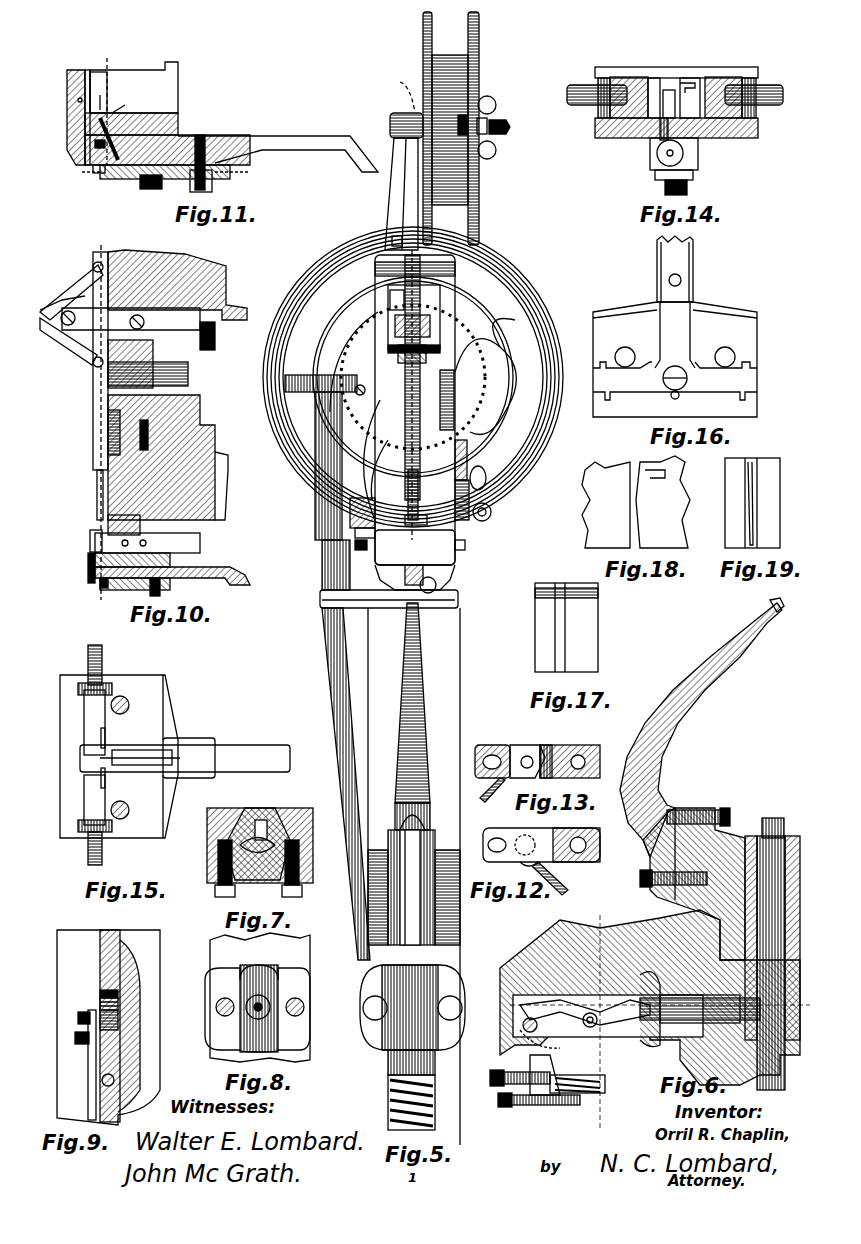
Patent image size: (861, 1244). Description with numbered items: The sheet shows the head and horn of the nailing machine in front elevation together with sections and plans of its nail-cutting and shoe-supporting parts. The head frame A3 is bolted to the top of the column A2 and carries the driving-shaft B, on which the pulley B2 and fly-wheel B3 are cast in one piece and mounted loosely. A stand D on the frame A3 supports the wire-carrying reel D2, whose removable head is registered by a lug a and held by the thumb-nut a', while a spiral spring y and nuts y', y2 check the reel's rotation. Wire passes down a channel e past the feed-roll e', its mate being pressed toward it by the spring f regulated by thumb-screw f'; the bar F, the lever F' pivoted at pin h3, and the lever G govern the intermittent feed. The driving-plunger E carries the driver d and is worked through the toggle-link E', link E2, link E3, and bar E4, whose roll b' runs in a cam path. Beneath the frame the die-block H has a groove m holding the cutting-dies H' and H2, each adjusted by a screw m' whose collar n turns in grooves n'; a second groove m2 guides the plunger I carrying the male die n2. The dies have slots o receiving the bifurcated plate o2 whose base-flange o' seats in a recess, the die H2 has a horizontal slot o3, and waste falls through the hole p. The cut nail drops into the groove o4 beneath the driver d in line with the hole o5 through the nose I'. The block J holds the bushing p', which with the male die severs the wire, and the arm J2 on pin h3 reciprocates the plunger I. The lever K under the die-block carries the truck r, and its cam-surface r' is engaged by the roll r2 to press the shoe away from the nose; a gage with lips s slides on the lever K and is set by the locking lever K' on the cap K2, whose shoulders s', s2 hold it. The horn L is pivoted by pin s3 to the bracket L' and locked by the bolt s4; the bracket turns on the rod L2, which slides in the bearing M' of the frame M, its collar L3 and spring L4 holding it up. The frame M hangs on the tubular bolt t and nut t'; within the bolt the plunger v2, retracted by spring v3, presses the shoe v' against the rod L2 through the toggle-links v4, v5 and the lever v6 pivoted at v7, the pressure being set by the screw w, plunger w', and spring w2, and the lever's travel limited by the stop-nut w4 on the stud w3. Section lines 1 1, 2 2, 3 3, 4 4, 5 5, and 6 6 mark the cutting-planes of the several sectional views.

In FIG. 5, the standard or column A2 is at (425, 678).
In FIG. 6, the standard or column A2 is at (570, 935).
In FIG. 7, the standard or column A2 is at (225, 808).
In FIG. 8, the standard or column A2 is at (300, 960).
In FIG. 9, the standard or column A2 is at (70, 964).
In FIG. 10, the frame of the head A3 is at (160, 258).
In FIG. 5, the frame of the head A3 is at (430, 452).
In FIG. 10, the driving-shaft B is at (184, 380).
In FIG. 5, the pulley B2 is at (478, 318).
In FIG. 5, the fly-wheel B3 is at (507, 258).
In FIG. 5, the stand D is at (397, 194).
In FIG. 5, the wire-carrying reel or drum D2 is at (477, 50).
In FIG. 5, the driving-plunger E is at (413, 395).
In FIG. 10, the toggle-link E' is at (71, 342).
In FIG. 5, the toggle-link E' is at (402, 359).
In FIG. 10, the link E2 is at (85, 272).
In FIG. 5, the link E2 is at (416, 308).
In FIG. 10, the link E3 is at (68, 303).
In FIG. 5, the link E3 is at (396, 300).
In FIG. 10, the bar E4 is at (130, 319).
In FIG. 5, the rod or bar F is at (365, 470).
In FIG. 5, the lever F' is at (369, 518).
In FIG. 5, the lever G is at (365, 443).
In FIG. 11, the die-holding block H is at (139, 123).
In FIG. 10, the die-holding block H is at (132, 560).
In FIG. 5, the die-holding block H is at (415, 547).
In FIG. 14, the die-holding block H is at (676, 136).
In FIG. 16, the die-holding block H is at (675, 359).
In FIG. 15, the die-holding block H is at (119, 756).
In FIG. 11, the cutting-die H' is at (89, 79).
In FIG. 14, the cutting-die H' is at (676, 82).
In FIG. 18, the cutting-die H' is at (606, 505).
In FIG. 15, the cutting-die H' is at (94, 722).
In FIG. 14, the cutting-die H2 is at (692, 80).
In FIG. 18, the cutting-die H2 is at (663, 502).
In FIG. 17, the cutting-die H2 is at (566, 627).
In FIG. 15, the cutting-die H2 is at (94, 800).
In FIG. 10, the plunger I is at (147, 543).
In FIG. 19, the plunger I is at (752, 503).
In FIG. 15, the plunger I is at (185, 758).
In FIG. 11, the nose I' is at (70, 117).
In FIG. 10, the nose I' is at (75, 568).
In FIG. 5, the nose I' is at (416, 565).
In FIG. 16, the nose I' is at (658, 387).
In FIG. 10, the block J is at (140, 525).
In FIG. 5, the block J is at (427, 522).
In FIG. 5, the arm J2 is at (462, 395).
In FIG. 11, the lever K is at (231, 144).
In FIG. 10, the lever K is at (172, 581).
In FIG. 5, the lever K is at (435, 585).
In FIG. 16, the lever K is at (675, 269).
In FIG. 11, the adjusting and locking lever K' is at (147, 193).
In FIG. 13, the adjusting and locking lever K' is at (487, 790).
In FIG. 12, the adjusting and locking lever K' is at (559, 878).
In FIG. 11, the cap K2 is at (182, 176).
In FIG. 10, the cap K2 is at (135, 589).
In FIG. 14, the cap K2 is at (665, 186).
In FIG. 16, the cap K2 is at (693, 278).
In FIG. 13, the cap K2 is at (570, 751).
In FIG. 12, the cap K2 is at (576, 836).
In FIG. 15, the cap K2 is at (185, 745).
In FIG. 5, the shoe-supporting horn L is at (440, 743).
In FIG. 6, the shoe-supporting horn L is at (702, 727).
In FIG. 5, the bracket L' is at (411, 887).
In FIG. 6, the bracket L' is at (694, 884).
In FIG. 6, the supporting-rod L2 is at (773, 818).
In FIG. 7, the supporting-rod L2 is at (222, 897).
In FIG. 5, the collar L3 is at (411, 1062).
In FIG. 6, the collar L3 is at (790, 1075).
In FIG. 5, the spiral spring L4 is at (412, 1109).
In FIG. 5, the bar or frame M is at (384, 1030).
In FIG. 7, the bar or frame M is at (273, 862).
In FIG. 5, the bearing M' is at (410, 1007).
In FIG. 7, the bearing M' is at (299, 901).
In FIG. 8, the bearing M' is at (257, 999).
In FIG. 10, the lug a is at (81, 495).
In FIG. 5, the lug a is at (428, 119).
In FIG. 5, the button or thumb-nut a' is at (498, 99).
In FIG. 10, the anti-friction roll b' is at (212, 343).
In FIG. 5, the driver d is at (420, 490).
In FIG. 10, the channel e is at (93, 376).
In FIG. 10, the feed-roll e' is at (110, 432).
In FIG. 5, the spring f is at (469, 460).
In FIG. 5, the thumb-screw f' is at (483, 474).
In FIG. 5, the pin h3 is at (482, 521).
In FIG. 5, the rectangular groove m is at (362, 553).
In FIG. 14, the rectangular groove m is at (770, 71).
In FIG. 16, the rectangular groove m is at (675, 388).
In FIG. 15, the rectangular groove m is at (126, 752).
In FIG. 5, the adjusting-screw m' is at (472, 545).
In FIG. 14, the adjusting-screw m' is at (678, 88).
In FIG. 15, the adjusting-screw m' is at (107, 747).
In FIG. 11, the rectangular groove m2 is at (134, 87).
In FIG. 16, the rectangular groove m2 is at (675, 335).
In FIG. 15, the rectangular groove m2 is at (125, 768).
In FIG. 14, the collar n is at (677, 99).
In FIG. 16, the collar n is at (675, 355).
In FIG. 15, the collar n is at (76, 757).
In FIG. 14, the vertical grooves n' is at (685, 64).
In FIG. 15, the vertical grooves n' is at (105, 755).
In FIG. 19, the male cutting-die n2 is at (752, 464).
In FIG. 15, the male cutting-die n2 is at (142, 747).
In FIG. 11, the vertical slots o is at (67, 92).
In FIG. 15, the vertical slots o is at (98, 755).
In FIG. 11, the base-flange o' is at (122, 101).
In FIG. 14, the base-flange o' is at (667, 104).
In FIG. 16, the base-flange o' is at (675, 366).
In FIG. 11, the bifurcated plate o2 is at (100, 100).
In FIG. 10, the bifurcated plate o2 is at (90, 542).
In FIG. 14, the bifurcated plate o2 is at (683, 95).
In FIG. 16, the bifurcated plate o2 is at (687, 379).
In FIG. 15, the bifurcated plate o2 is at (92, 765).
In FIG. 5, the horizontal slot o3 is at (340, 650).
In FIG. 14, the horizontal slot o3 is at (692, 92).
In FIG. 18, the horizontal slot o3 is at (652, 478).
In FIG. 17, the horizontal slot o3 is at (598, 603).
In FIG. 11, the vertical groove o4 is at (78, 99).
In FIG. 5, the vertical groove o4 is at (310, 375).
In FIG. 15, the vertical groove o4 is at (101, 756).
In FIG. 11, the hole o5 is at (98, 170).
In FIG. 10, the hole o5 is at (90, 578).
In FIG. 5, the hole o5 is at (372, 345).
In FIG. 16, the hole o5 is at (671, 402).
In FIG. 14, the hole p is at (649, 136).
In FIG. 10, the steel bushing p' is at (105, 523).
In FIG. 9, the steel bushing p' is at (82, 1065).
In FIG. 11, the roll or truck r is at (105, 154).
In FIG. 10, the roll or truck r is at (106, 588).
In FIG. 14, the roll or truck r is at (674, 154).
In FIG. 11, the cam-surface r' is at (344, 175).
In FIG. 10, the cam-surface r' is at (245, 590).
In FIG. 11, the anti-friction roll r2 is at (102, 150).
In FIG. 10, the anti-friction roll r2 is at (120, 592).
In FIG. 14, the anti-friction roll r2 is at (690, 176).
In FIG. 13, the anti-friction roll r2 is at (492, 751).
In FIG. 12, the anti-friction roll r2 is at (505, 830).
In FIG. 6, the lips s is at (617, 833).
In FIG. 13, the shoulder s' is at (527, 751).
In FIG. 12, the shoulder s' is at (529, 872).
In FIG. 5, the shoulder s2 is at (430, 808).
In FIG. 13, the shoulder s2 is at (532, 778).
In FIG. 12, the shoulder s2 is at (532, 838).
In FIG. 6, the pin s3 is at (638, 878).
In FIG. 6, the locking-bolt s4 is at (709, 817).
In FIG. 6, the tubular bolt t is at (700, 983).
In FIG. 7, the tubular bolt t is at (257, 830).
In FIG. 6, the nut t' is at (650, 1009).
In FIG. 6, the shoe v' is at (705, 984).
In FIG. 7, the shoe v' is at (234, 836).
In FIG. 8, the shoe v' is at (251, 1016).
In FIG. 6, the plunger v2 is at (712, 1045).
In FIG. 7, the plunger v2 is at (262, 820).
In FIG. 6, the spiral spring v3 is at (650, 1003).
In FIG. 6, the toggle-link v4 is at (603, 1023).
In FIG. 9, the toggle-link v4 is at (118, 1020).
In FIG. 6, the toggle-link v5 is at (557, 1010).
In FIG. 9, the toggle-link v5 is at (100, 1001).
In FIG. 6, the lever v6 is at (512, 1040).
In FIG. 9, the lever v6 is at (100, 992).
In FIG. 6, the pivot v7 is at (523, 1024).
In FIG. 6, the adjusting-screw w is at (520, 1071).
In FIG. 6, the plunger w' is at (545, 1075).
In FIG. 6, the spiral spring w2 is at (608, 1085).
In FIG. 9, the spiral spring w2 is at (100, 1082).
In FIG. 6, the stud w3 is at (545, 1108).
In FIG. 6, the stop-nut w4 is at (504, 1109).
In FIG. 5, the spiral spring y is at (493, 117).
In FIG. 5, the nut y' is at (497, 149).
In FIG. 5, the nut y2 is at (510, 127).
In FIG. 5, the section line 1 is at (405, 90).
In FIG. 6, the section line 2 is at (664, 1001).
In FIG. 6, the section line 3 is at (592, 1025).
In FIG. 11, the section line 4 is at (160, 174).
In FIG. 11, the section line 5 is at (109, 118).
In FIG. 10, the section line 6 is at (100, 415).